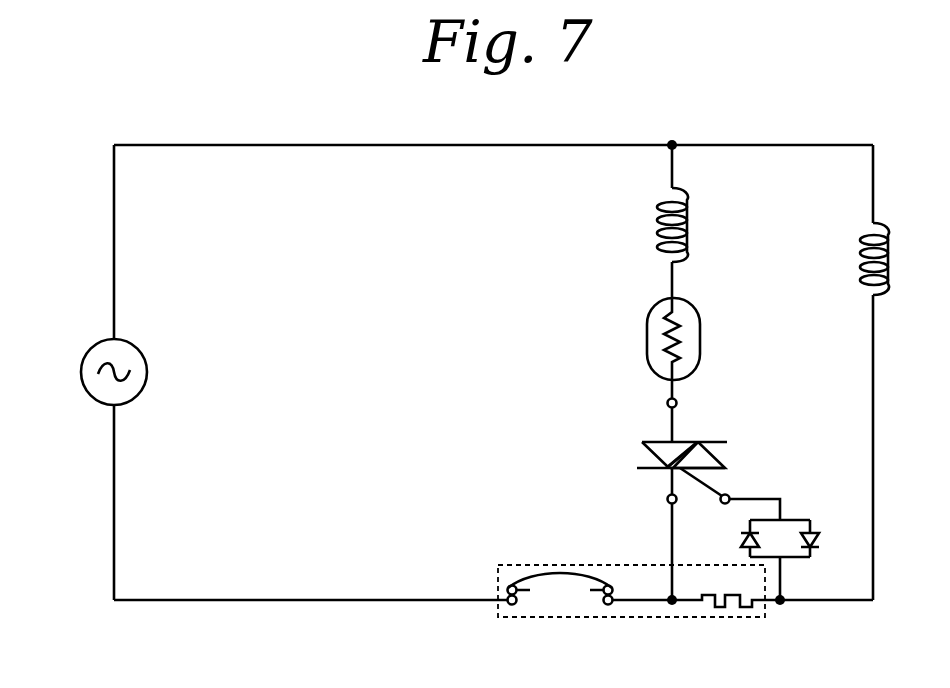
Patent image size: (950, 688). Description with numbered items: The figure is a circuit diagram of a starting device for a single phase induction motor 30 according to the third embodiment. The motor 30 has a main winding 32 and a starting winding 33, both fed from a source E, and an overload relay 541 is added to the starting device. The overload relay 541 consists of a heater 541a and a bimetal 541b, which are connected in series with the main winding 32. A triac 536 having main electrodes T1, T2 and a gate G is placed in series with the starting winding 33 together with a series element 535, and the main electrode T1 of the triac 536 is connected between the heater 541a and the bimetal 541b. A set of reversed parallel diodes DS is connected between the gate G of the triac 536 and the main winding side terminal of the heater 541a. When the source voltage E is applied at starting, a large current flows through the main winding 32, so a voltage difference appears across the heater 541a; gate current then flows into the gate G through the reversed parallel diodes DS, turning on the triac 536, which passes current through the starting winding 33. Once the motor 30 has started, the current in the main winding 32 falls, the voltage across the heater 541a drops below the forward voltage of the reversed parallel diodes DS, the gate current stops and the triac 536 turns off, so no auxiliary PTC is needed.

The single phase induction motor 30 is at (768, 145).
The main winding 32 is at (859, 240).
The starting winding 33 is at (688, 229).
The resistance element 535 is at (701, 334).
The triac 536 is at (727, 442).
The main electrode T1 is at (666, 499).
The main electrode T2 is at (666, 403).
The gate G is at (730, 498).
The reversed parallel diodes DS is at (811, 530).
The source E is at (92, 348).
The overload relay 541 is at (639, 587).
The heater 541a is at (718, 608).
The bimetal 541b is at (538, 572).